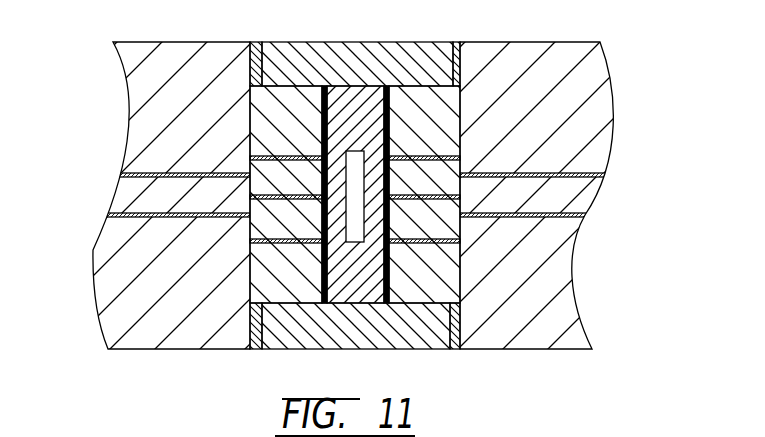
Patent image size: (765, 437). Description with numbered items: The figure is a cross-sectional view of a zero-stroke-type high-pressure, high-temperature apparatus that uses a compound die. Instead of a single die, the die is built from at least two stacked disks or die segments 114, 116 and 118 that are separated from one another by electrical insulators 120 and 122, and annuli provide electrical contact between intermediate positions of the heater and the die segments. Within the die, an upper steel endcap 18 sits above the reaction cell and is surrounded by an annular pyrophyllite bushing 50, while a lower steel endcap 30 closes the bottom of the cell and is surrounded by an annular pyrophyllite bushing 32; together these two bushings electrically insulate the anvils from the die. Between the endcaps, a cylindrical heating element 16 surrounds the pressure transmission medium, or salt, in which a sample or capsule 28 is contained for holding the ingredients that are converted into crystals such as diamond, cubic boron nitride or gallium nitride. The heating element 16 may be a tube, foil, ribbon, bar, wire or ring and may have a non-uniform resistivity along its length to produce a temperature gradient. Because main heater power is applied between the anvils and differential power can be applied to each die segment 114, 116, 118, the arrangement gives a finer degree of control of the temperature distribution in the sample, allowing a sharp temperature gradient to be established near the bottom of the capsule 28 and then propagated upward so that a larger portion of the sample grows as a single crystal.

The heating element 16 is at (306, 115).
The upper steel endcap 18 is at (342, 56).
The capsule 28 is at (367, 152).
The lower steel endcap 30 is at (323, 340).
The annular pyrophyllite bushing 32 is at (455, 338).
The annular pyrophyllite bushing 50 is at (458, 48).
The die segment 114 is at (147, 117).
The die segment 116 is at (124, 195).
The die segment 118 is at (113, 287).
The electrical insulator 120 is at (148, 172).
The electrical insulator 122 is at (128, 218).